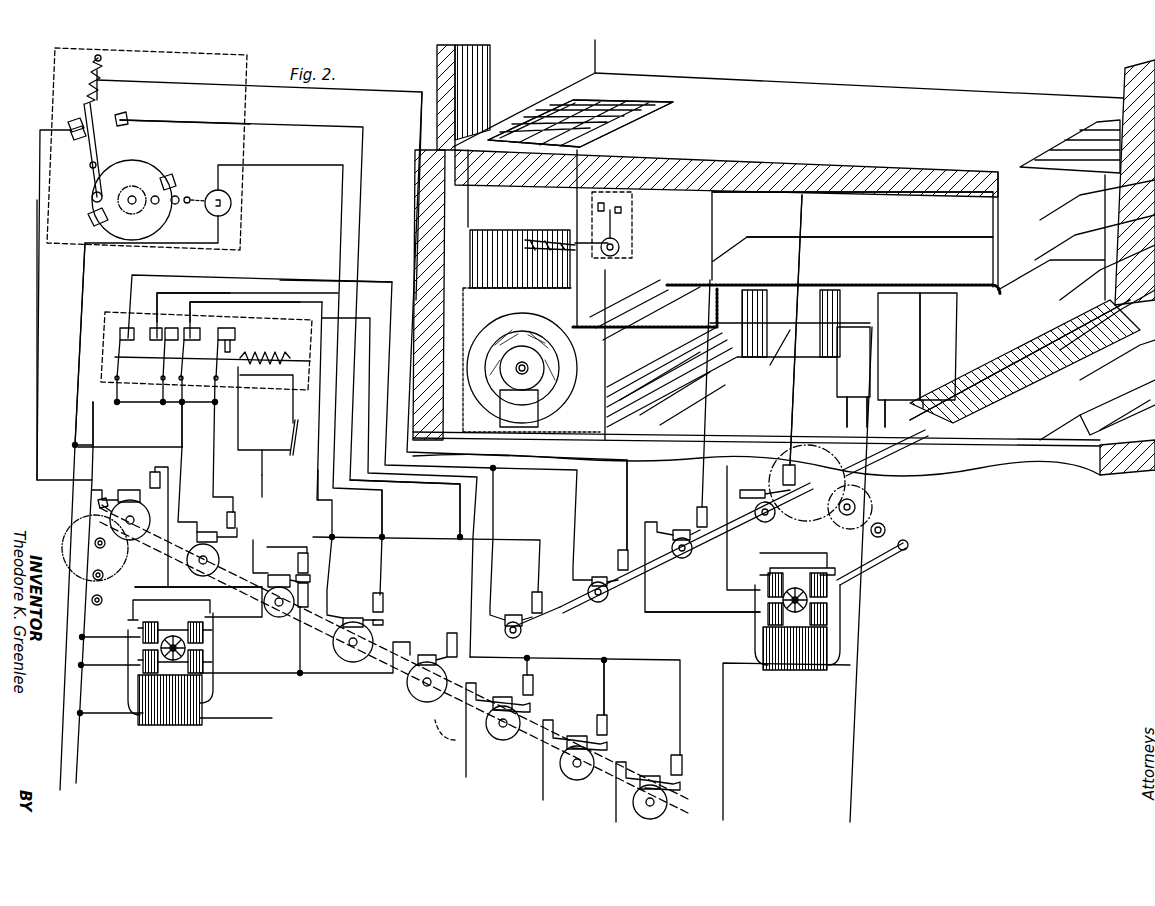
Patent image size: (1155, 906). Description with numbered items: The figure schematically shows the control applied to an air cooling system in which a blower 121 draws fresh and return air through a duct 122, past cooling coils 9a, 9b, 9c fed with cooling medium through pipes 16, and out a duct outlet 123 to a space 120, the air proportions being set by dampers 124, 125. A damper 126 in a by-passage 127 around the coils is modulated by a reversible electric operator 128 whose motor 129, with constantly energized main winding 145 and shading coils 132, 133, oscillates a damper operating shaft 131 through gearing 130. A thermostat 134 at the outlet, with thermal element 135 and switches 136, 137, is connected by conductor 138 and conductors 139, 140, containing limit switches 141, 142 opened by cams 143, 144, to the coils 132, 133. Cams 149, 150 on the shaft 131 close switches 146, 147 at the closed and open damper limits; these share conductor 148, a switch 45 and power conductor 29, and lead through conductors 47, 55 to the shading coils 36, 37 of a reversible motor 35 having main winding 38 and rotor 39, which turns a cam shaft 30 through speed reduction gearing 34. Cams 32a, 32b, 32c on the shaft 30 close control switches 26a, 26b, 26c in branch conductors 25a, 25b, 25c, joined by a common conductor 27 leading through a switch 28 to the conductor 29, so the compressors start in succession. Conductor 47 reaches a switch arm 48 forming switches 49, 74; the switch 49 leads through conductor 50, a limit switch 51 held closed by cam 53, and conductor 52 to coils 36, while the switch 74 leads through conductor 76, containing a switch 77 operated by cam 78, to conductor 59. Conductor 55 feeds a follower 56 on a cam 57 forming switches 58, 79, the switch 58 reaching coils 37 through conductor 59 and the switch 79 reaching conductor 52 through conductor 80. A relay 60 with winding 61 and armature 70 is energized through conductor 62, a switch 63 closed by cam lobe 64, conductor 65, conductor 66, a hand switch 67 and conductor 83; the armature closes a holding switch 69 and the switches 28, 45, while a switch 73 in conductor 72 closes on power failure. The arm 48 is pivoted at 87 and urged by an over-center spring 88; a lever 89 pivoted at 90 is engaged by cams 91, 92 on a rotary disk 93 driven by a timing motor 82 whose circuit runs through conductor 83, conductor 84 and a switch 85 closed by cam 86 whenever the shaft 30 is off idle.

The cooling coil 9a is at (950, 310).
The cooling coil 9b is at (900, 310).
The cooling coil 9c is at (855, 310).
The pipes 16 is at (845, 418).
The branch conductor 25a is at (618, 810).
The branch conductor 25b is at (545, 795).
The branch conductor 25c is at (462, 760).
The control switch 26a is at (698, 770).
The control switch 26b is at (612, 738).
The control switch 26c is at (540, 695).
The common conductor 27 is at (636, 662).
The switch 28 is at (200, 295).
The power conductor 29 is at (93, 420).
The cam shaft 30 is at (427, 736).
The cam 32a is at (668, 808).
The cam 32b is at (572, 780).
The cam 32c is at (485, 732).
The speed reduction gearing 34 is at (116, 566).
The reversible motor 35 is at (222, 697).
The shading coil windings 36 is at (210, 637).
The shading coil windings 37 is at (140, 628).
The main winding 38 is at (178, 725).
The rotor 39 is at (180, 620).
The switch 45 is at (124, 325).
The conductor 47 is at (622, 480).
The switch arm 48 is at (76, 120).
The switch 49 is at (70, 133).
The conductor 50 is at (37, 302).
The limit switch 51 is at (148, 478).
The conductor 52 is at (233, 590).
The cam 53 is at (138, 540).
The conductor 55 is at (425, 540).
The follower 56 is at (296, 568).
The cam 57 is at (286, 612).
The switch 58 is at (312, 580).
The conductor 59 is at (300, 662).
The relay 60 is at (255, 385).
The relay winding 61 is at (275, 352).
The conductor 62 is at (182, 420).
The switch 63 is at (225, 515).
The cam lobe 64 is at (220, 553).
The conductor 65 is at (240, 486).
The conductor 66 is at (259, 464).
The switch 67 is at (288, 430).
The switch 69 is at (235, 335).
The armature 70 is at (212, 369).
The conductor 72 is at (318, 478).
The switch 73 is at (175, 285).
The switch 74 is at (115, 118).
The conductor 76 is at (318, 127).
The switch 77 is at (440, 650).
The cam 78 is at (415, 695).
The switch 79 is at (312, 570).
The conductor 80 is at (288, 545).
The auxiliary timing motor 82 is at (231, 198).
The conductor 83 is at (85, 265).
The conductor 84 is at (370, 520).
The switch 85 is at (360, 612).
The cam 86 is at (340, 657).
The pivot 87 is at (100, 80).
The over-center spring 88 is at (90, 66).
The lever 89 is at (95, 140).
The pivot 90 is at (90, 165).
The cam 91 is at (95, 212).
The cam 92 is at (176, 180).
The rotary disk 93 is at (145, 165).
The space 120 is at (480, 100).
The blower 121 is at (510, 340).
The duct 122 is at (790, 258).
The duct outlet 123 is at (608, 120).
The damper 124 is at (1108, 420).
The damper 125 is at (1055, 260).
The damper 126 is at (1000, 395).
The by-passage 127 is at (892, 460).
The reversible electric operator 128 is at (722, 634).
The motor 129 is at (845, 640).
The gearing 130 is at (896, 493).
The damper operating shaft 131 is at (768, 520).
The shading coils 132 is at (840, 582).
The shading coils 133 is at (840, 610).
The thermostat 134 is at (640, 232).
The thermal element 135 is at (545, 238).
The switch 136 is at (600, 195).
The switch 137 is at (624, 205).
The conductor 138 is at (770, 358).
The conductor 139 is at (792, 418).
The conductor 140 is at (662, 604).
The switch 141 is at (780, 472).
The switch 142 is at (696, 522).
The cam 143 is at (782, 518).
The cam 144 is at (680, 558).
The main winding 145 is at (800, 670).
The switch 146 is at (616, 572).
The switch 147 is at (518, 612).
The conductor 148 is at (318, 278).
The cam 149 is at (600, 604).
The cam 150 is at (522, 632).